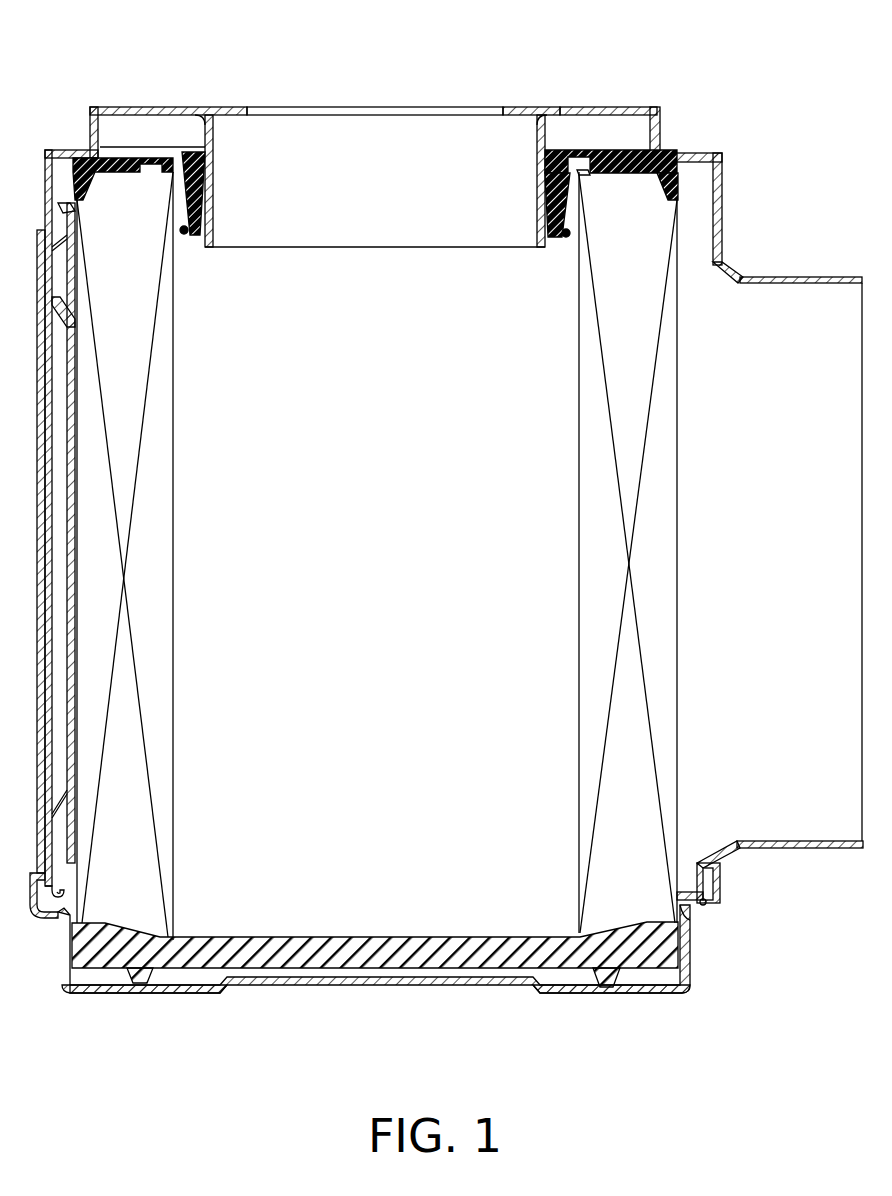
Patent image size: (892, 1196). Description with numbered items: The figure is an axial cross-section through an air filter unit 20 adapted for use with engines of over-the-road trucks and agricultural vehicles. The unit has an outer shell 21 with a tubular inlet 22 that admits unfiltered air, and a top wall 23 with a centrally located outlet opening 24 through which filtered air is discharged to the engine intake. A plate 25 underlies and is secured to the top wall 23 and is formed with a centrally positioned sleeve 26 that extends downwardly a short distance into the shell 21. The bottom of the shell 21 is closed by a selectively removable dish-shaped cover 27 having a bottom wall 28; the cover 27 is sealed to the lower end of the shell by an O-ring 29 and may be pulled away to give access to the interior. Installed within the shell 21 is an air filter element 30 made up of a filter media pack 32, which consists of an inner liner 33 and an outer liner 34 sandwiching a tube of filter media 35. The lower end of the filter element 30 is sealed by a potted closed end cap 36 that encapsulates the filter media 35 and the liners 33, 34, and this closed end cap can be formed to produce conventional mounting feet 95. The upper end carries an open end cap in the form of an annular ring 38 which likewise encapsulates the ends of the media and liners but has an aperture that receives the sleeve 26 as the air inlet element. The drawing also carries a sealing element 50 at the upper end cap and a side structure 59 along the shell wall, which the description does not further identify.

The air filter unit 20 is at (755, 124).
The outer shell 21 is at (732, 182).
The tubular inlet 22 is at (823, 276).
The top wall 23 is at (550, 108).
The outlet opening 24 is at (478, 108).
The plate 25 is at (624, 108).
The sleeve 26 is at (540, 192).
The dish-shaped cover 27 is at (708, 946).
The bottom wall 28 is at (565, 995).
The O-ring 29 is at (715, 905).
The air filter element 30 is at (692, 496).
The filter media pack 32 is at (640, 585).
The inner liner 33 is at (578, 540).
The outer liner 34 is at (680, 662).
The filter media 35 is at (655, 750).
The closed end cap 36 is at (355, 969).
The open end cap 38 is at (630, 153).
The seal gasket 50 is at (123, 140).
The anti-drainback valve structure 59 is at (72, 150).
The mounting feet 95 is at (128, 995).